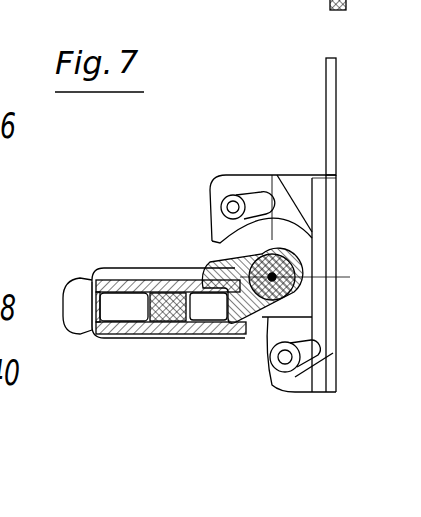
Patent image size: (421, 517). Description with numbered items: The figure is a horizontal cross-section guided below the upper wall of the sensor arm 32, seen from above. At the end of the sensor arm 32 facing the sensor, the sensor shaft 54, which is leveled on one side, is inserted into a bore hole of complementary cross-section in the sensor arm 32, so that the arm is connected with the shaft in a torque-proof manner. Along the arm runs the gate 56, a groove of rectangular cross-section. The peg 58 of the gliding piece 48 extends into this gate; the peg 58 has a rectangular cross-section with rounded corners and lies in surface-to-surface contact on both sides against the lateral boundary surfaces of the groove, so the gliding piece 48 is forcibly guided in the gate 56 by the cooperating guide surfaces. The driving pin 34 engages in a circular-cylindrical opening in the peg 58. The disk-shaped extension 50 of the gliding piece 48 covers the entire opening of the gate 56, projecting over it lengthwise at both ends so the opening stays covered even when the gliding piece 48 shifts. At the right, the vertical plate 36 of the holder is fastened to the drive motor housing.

The sensor arm 32 is at (130, 270).
The driving pin 34 is at (163, 300).
The vertical plate 36 is at (338, 111).
The gliding piece 48 is at (75, 292).
The disk-shaped extension 50 is at (72, 328).
The sensor shaft 54 is at (273, 277).
The gate 56 is at (125, 300).
The peg 58 is at (205, 330).